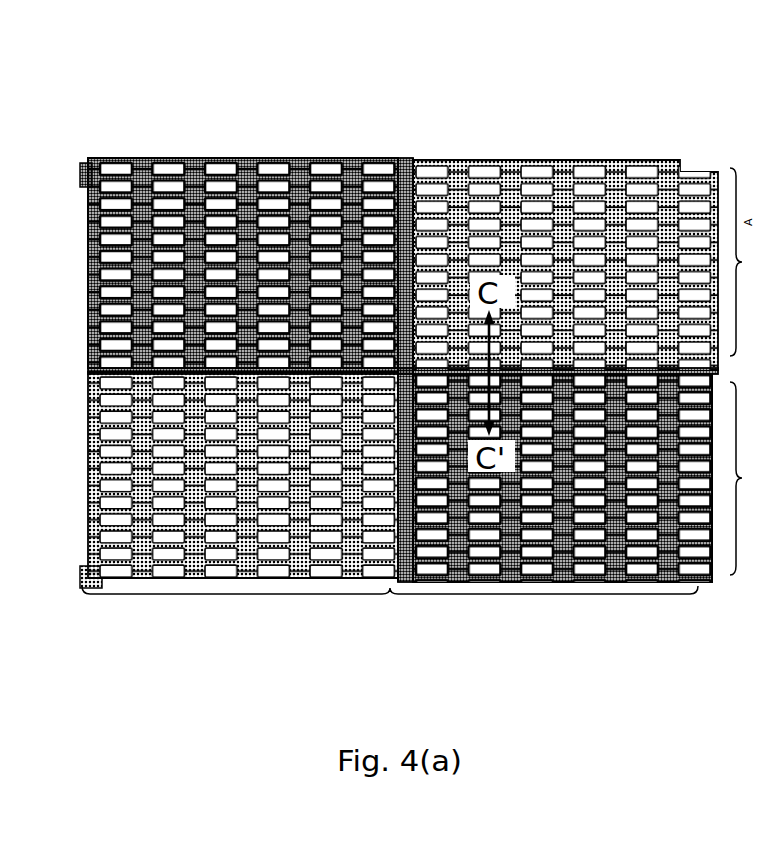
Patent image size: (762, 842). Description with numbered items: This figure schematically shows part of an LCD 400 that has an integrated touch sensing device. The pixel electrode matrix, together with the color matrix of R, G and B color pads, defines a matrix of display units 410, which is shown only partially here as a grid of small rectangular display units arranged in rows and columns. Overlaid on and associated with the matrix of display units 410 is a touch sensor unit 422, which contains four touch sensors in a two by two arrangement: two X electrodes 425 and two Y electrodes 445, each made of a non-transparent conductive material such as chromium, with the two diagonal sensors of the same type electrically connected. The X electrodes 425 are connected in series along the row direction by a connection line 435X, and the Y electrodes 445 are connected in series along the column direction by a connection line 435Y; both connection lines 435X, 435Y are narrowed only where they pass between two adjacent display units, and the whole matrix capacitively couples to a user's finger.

The LCD 400 is at (409, 335).
The matrix of display units 410 is at (486, 234).
The touch sensor unit 422 is at (408, 138).
The X electrode 425 is at (570, 235).
The connection line along X-direction 435X is at (425, 512).
The connection line along Y-direction 435Y is at (388, 542).
The Y electrode 445 is at (250, 235).